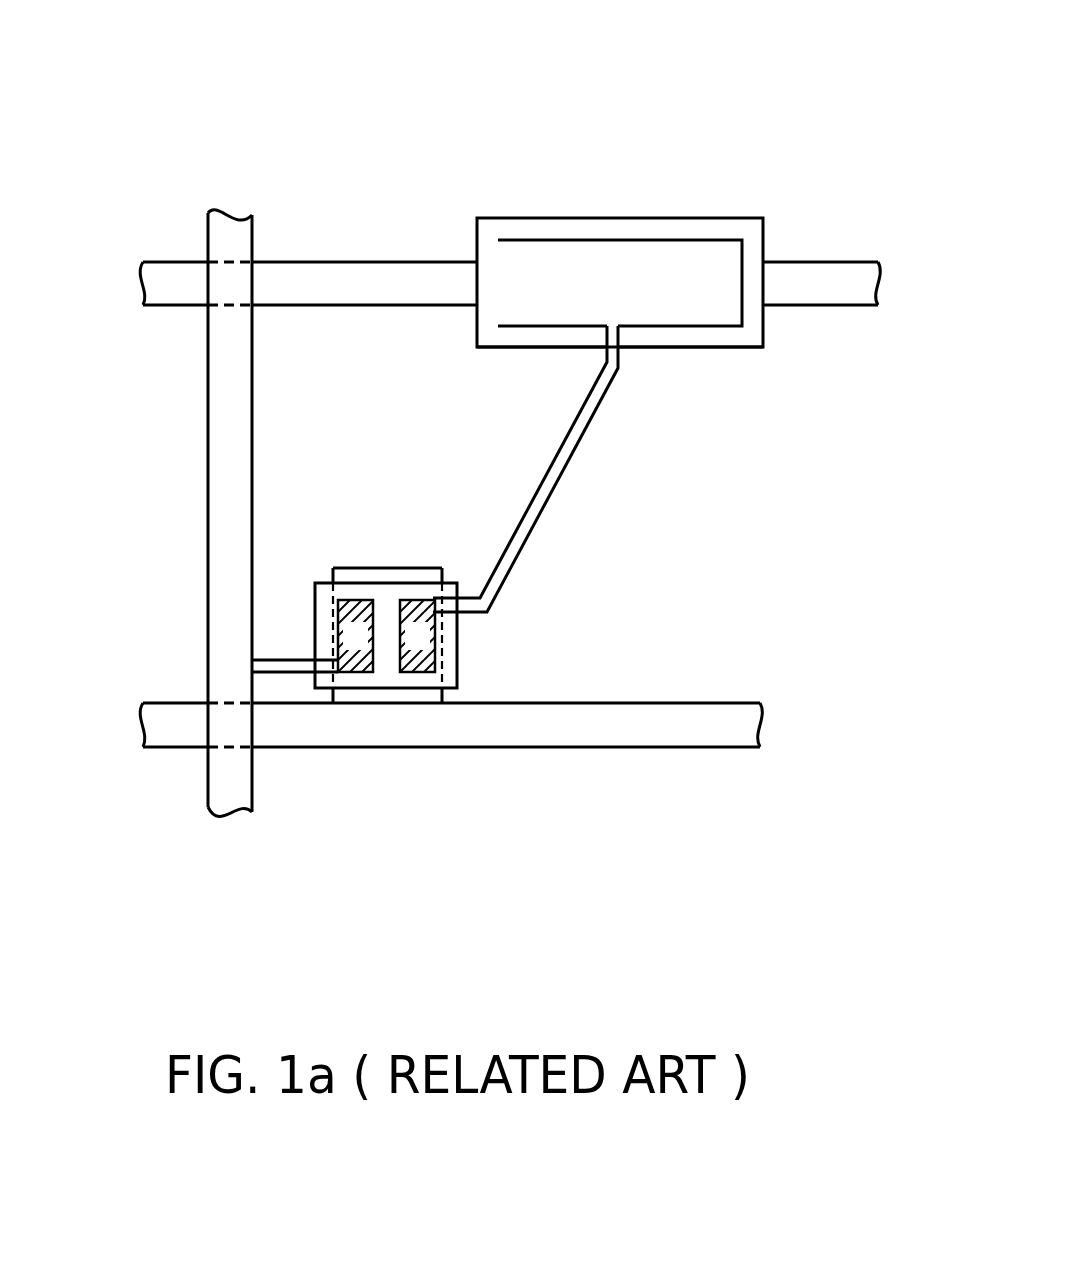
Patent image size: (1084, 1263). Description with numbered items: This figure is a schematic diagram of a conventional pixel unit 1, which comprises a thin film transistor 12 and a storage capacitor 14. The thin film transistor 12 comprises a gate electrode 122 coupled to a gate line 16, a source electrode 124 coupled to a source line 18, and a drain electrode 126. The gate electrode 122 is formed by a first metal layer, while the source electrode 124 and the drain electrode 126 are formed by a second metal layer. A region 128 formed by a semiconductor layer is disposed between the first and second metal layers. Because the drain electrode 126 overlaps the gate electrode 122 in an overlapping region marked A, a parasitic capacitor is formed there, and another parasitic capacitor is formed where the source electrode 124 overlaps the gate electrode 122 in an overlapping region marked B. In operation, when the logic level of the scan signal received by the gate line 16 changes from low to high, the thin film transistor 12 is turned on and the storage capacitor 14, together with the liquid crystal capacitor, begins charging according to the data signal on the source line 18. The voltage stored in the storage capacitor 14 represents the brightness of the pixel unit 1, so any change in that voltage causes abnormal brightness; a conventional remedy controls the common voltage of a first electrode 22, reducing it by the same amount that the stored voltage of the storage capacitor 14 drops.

The pixel unit 1 is at (778, 97).
The thin film transistor 12 is at (395, 458).
The storage capacitor 14 is at (622, 175).
The gate line 16 is at (632, 728).
The source line 18 is at (226, 785).
The first electrode 22 is at (720, 217).
The gate electrode 122 is at (387, 567).
The source electrode 124 is at (350, 605).
The drain electrode 126 is at (420, 605).
The region 128 is at (387, 690).